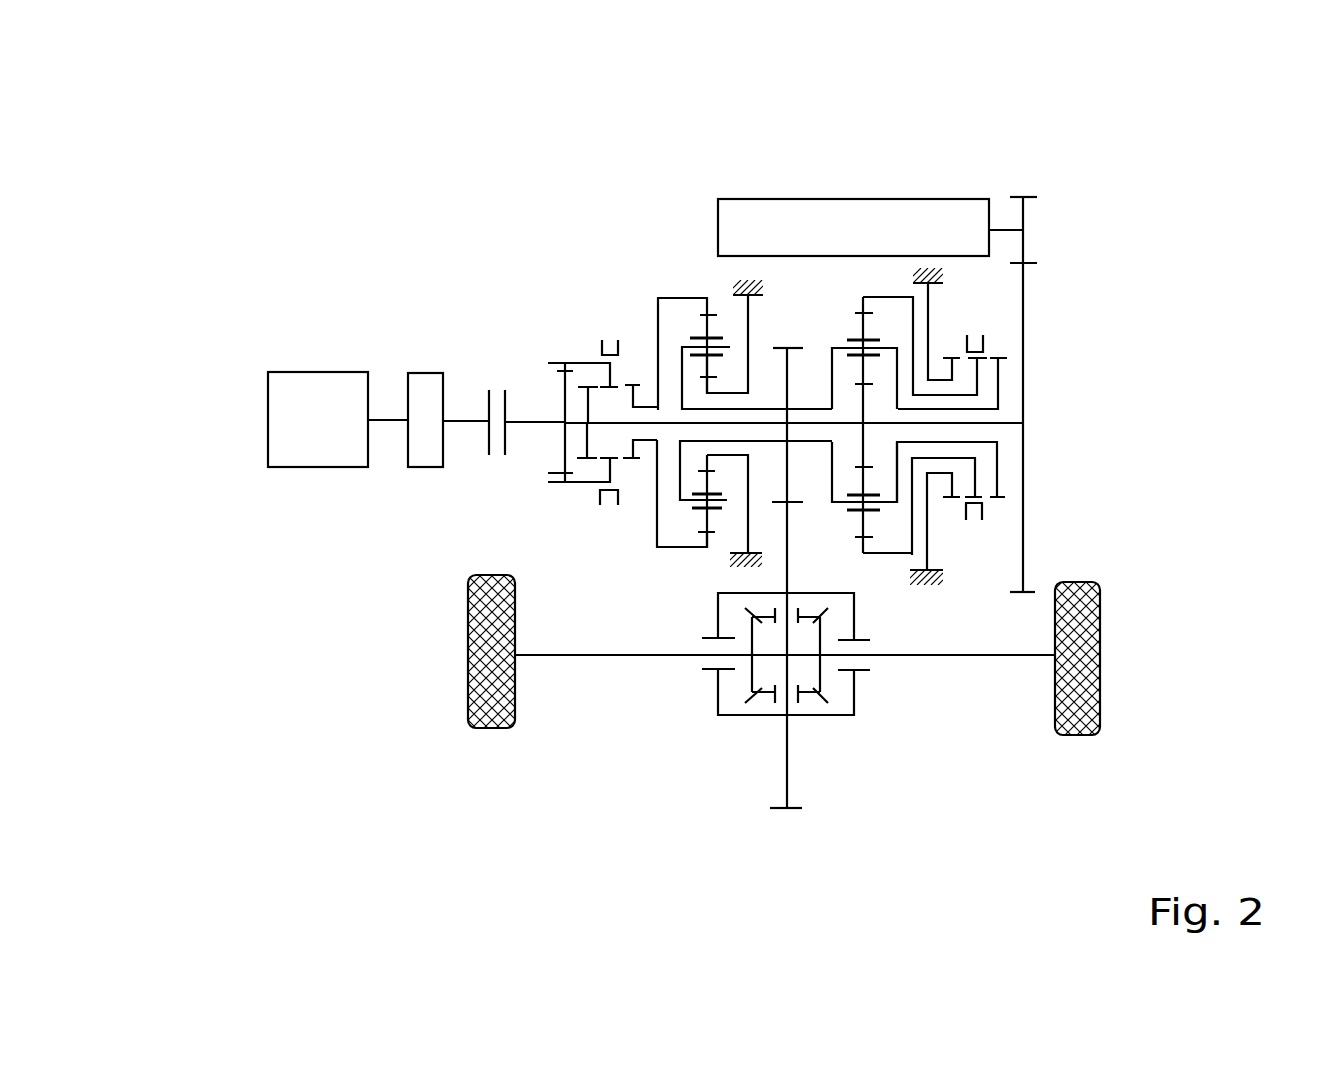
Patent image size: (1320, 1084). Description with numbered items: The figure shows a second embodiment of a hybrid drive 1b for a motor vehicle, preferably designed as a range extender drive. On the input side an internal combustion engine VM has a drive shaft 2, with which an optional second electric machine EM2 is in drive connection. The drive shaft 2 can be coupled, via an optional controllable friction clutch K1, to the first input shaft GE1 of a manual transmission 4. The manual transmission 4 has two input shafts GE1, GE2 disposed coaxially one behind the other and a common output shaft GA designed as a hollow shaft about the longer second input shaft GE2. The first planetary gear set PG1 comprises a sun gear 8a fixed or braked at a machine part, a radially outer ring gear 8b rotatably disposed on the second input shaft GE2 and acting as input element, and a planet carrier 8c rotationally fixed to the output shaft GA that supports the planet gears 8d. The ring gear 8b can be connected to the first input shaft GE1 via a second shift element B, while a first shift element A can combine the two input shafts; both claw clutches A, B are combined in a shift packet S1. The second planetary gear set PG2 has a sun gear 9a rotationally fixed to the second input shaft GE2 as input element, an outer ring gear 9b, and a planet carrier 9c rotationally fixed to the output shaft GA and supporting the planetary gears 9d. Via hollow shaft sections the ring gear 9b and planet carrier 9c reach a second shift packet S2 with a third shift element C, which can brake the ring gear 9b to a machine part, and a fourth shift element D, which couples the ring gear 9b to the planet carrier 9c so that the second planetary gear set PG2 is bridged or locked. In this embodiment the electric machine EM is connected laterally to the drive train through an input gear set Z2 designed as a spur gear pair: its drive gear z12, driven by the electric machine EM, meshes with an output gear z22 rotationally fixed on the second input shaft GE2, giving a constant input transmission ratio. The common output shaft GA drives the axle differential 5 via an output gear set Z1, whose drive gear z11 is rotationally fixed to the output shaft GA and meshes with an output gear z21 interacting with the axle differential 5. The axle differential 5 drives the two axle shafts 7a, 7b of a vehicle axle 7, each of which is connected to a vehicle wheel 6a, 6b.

The hybrid drive 1b is at (278, 205).
The drive shaft 2 is at (387, 418).
The internal combustion engine VM is at (308, 468).
The second electric machine EM2 is at (425, 468).
The friction clutch K1 is at (490, 400).
The first input shaft GE1 is at (527, 418).
The first shift element A is at (583, 390).
The second shift element B is at (640, 379).
The shift packet S1 is at (607, 519).
The manual transmission 4 is at (648, 225).
The second input shaft GE2 is at (808, 424).
The first planetary gear set PG1 is at (706, 295).
The ring gear 8b is at (667, 298).
The planet gears 8d is at (706, 337).
The planet carrier 8c is at (690, 502).
The sun gear 8a is at (737, 455).
The output shaft GA is at (757, 410).
The output gear set Z1 is at (784, 868).
The drive gear z11 is at (790, 347).
The output gear z21 is at (778, 811).
The second planetary gear set PG2 is at (867, 293).
The sun gear 9a is at (863, 410).
The ring gear 9b is at (913, 305).
The planet carrier 9c is at (863, 403).
The planetary gears 9d is at (863, 325).
The third shift element C is at (933, 324).
The fourth shift element D is at (952, 347).
The second shift packet S2 is at (945, 529).
The electric machine EM is at (934, 198).
The input gear set Z2 is at (1023, 148).
The drive gear z12 is at (1028, 196).
The output gear z22 is at (1030, 592).
The axle differential 5 is at (745, 715).
The vehicle axle 7 is at (1004, 665).
The axle shaft 7a is at (588, 655).
The axle shaft 7b is at (1013, 658).
The vehicle wheel 6a is at (483, 728).
The vehicle wheel 6b is at (1100, 608).